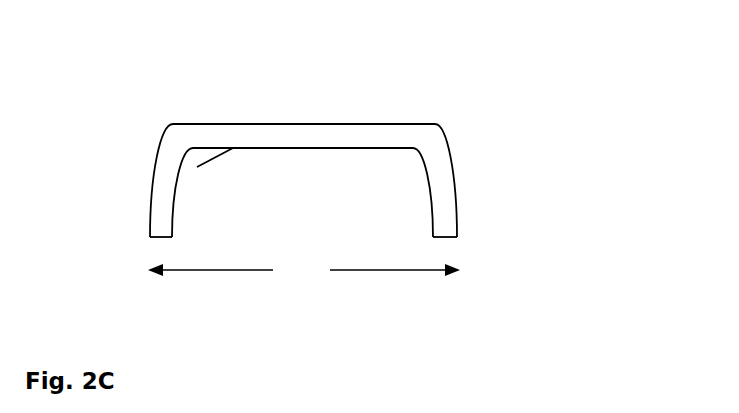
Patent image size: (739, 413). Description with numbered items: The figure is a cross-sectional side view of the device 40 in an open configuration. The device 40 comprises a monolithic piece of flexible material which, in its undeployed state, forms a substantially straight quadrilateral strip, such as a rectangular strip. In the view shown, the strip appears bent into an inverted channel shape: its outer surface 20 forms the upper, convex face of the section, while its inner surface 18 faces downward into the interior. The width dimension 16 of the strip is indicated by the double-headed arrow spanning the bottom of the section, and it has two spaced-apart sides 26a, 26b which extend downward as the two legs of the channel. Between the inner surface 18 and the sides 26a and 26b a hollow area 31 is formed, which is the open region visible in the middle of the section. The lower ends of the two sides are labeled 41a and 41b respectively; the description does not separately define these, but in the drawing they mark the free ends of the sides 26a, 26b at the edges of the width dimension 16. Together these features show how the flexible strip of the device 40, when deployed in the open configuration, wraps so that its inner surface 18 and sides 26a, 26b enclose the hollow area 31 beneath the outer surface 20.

The device 40 is at (494, 76).
The outer surface 20 is at (266, 124).
The hollow area 31 is at (380, 174).
The side 26a is at (457, 226).
The side 26b is at (150, 226).
The right leg end 41a is at (442, 238).
The left leg end 41b is at (160, 238).
The inner surface 18 is at (197, 167).
The width dimension 16 is at (304, 272).